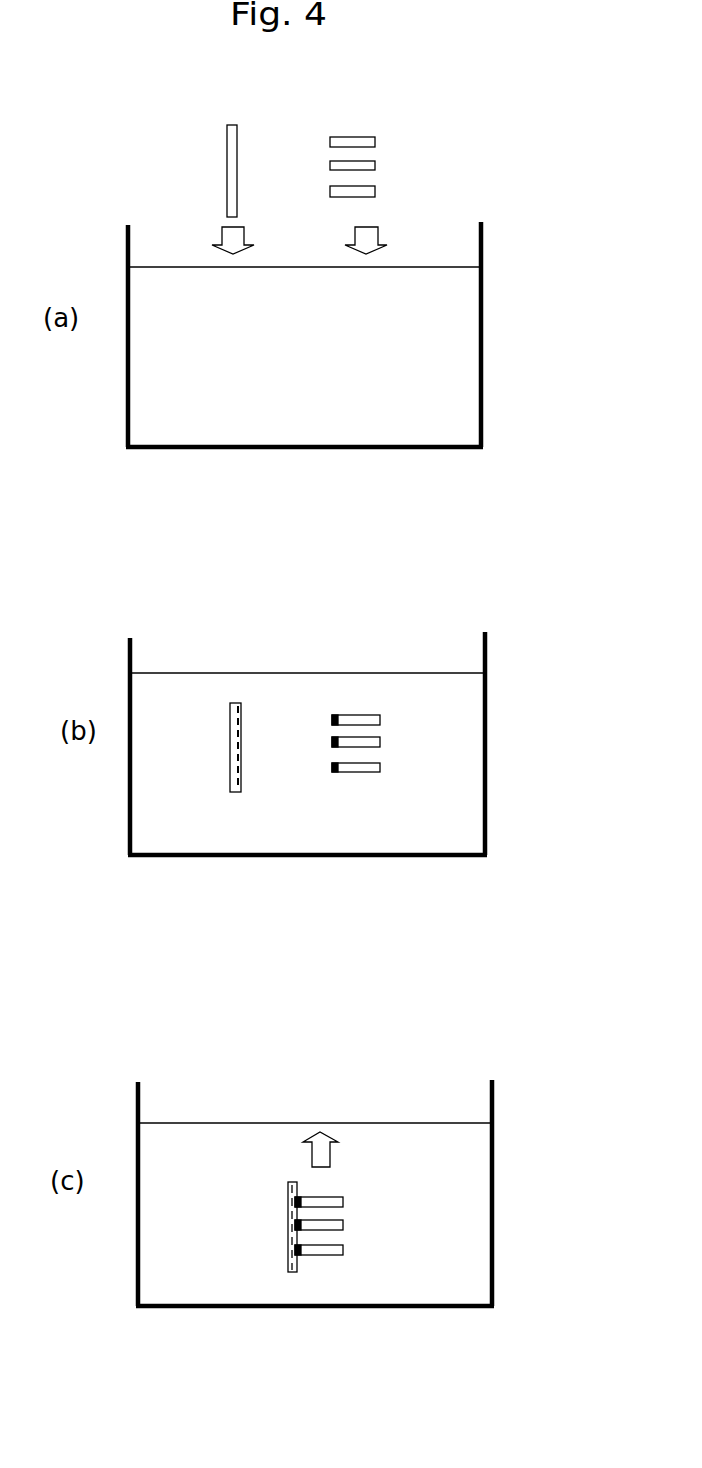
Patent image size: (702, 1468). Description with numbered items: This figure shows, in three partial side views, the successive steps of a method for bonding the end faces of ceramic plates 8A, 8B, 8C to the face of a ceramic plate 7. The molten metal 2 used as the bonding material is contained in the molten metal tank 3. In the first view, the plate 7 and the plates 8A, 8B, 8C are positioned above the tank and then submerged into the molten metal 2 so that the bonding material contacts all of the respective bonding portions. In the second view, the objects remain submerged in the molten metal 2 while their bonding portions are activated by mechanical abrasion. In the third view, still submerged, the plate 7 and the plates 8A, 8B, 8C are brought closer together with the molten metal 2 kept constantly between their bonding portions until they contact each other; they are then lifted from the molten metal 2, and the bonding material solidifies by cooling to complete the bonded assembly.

The molten metal 2 is at (445, 333).
The molten metal tank 3 is at (485, 410).
The plate 7 is at (235, 157).
The plate 8A is at (375, 142).
The plate 8B is at (375, 165).
The plate 8C is at (375, 192).